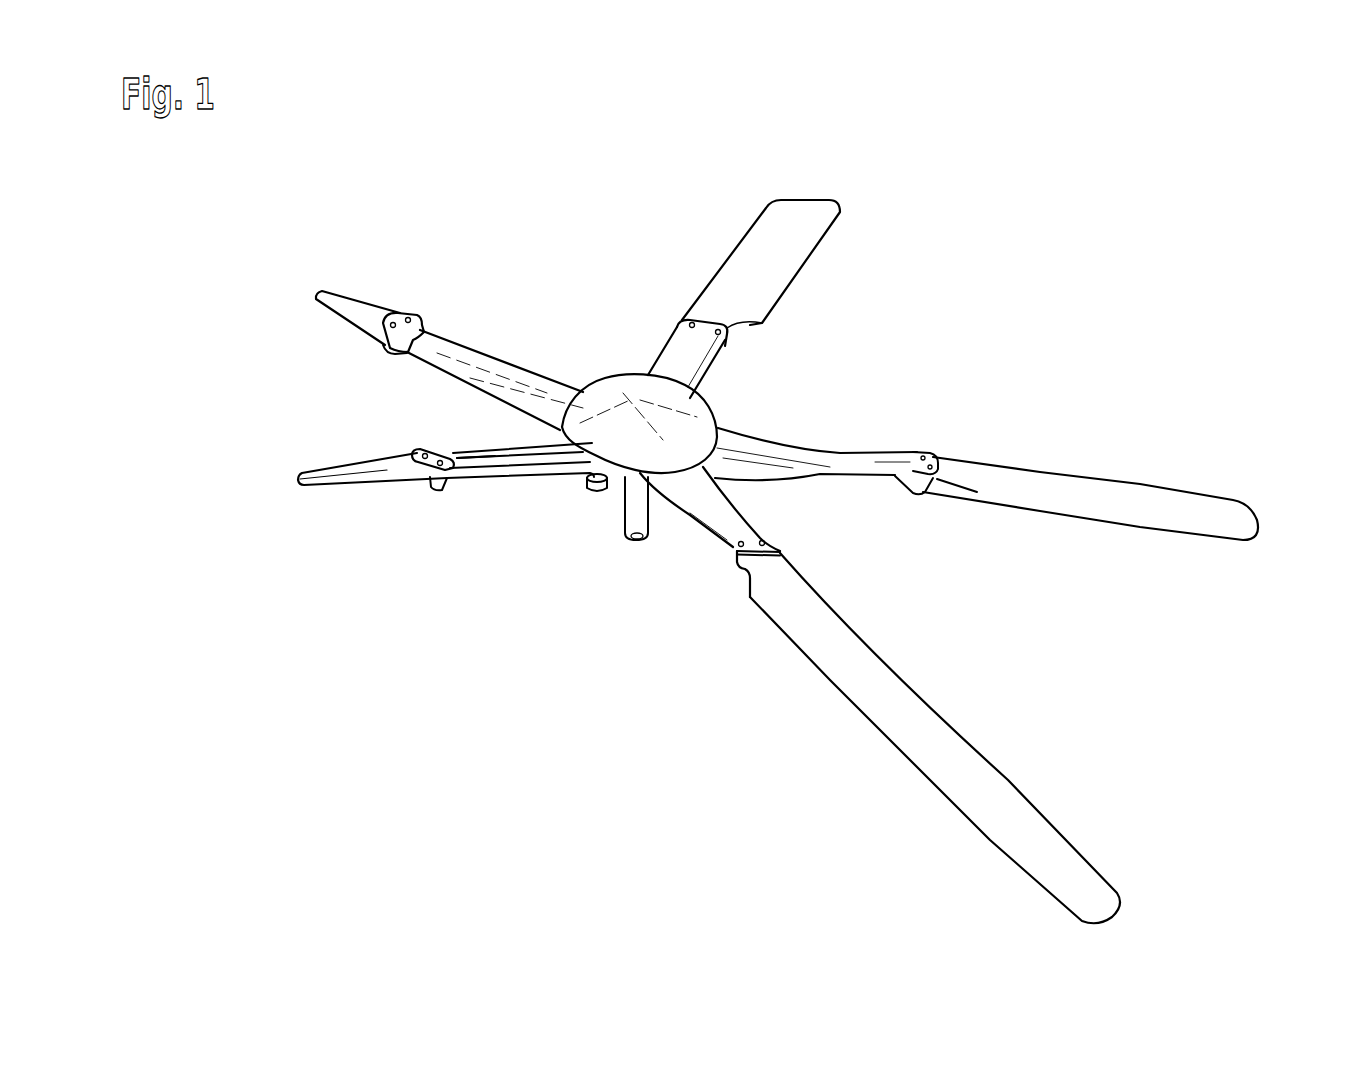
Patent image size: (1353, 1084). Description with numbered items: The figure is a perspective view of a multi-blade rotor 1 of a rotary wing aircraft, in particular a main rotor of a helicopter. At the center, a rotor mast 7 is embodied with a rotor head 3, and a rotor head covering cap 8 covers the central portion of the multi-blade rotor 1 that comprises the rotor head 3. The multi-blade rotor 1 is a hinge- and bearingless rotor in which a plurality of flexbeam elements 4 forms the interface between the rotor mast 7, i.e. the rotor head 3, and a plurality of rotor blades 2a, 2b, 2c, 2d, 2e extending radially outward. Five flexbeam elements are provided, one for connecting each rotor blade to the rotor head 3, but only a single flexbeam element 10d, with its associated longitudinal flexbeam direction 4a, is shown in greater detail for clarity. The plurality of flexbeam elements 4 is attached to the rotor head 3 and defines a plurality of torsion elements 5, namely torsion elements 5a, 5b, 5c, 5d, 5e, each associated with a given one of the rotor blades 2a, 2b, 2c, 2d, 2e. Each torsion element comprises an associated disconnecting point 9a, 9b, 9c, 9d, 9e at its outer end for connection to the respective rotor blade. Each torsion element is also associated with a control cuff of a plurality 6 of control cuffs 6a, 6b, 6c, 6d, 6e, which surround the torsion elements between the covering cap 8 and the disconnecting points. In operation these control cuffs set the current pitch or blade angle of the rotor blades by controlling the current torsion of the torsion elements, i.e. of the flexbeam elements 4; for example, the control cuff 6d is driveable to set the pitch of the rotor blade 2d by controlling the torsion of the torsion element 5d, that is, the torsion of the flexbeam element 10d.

The multi-blade rotor 1 is at (578, 300).
The rotor blade 2a is at (810, 218).
The rotor blade 2b is at (1237, 517).
The rotor blade 2c is at (947, 750).
The rotor blade 2d is at (310, 473).
The rotor blade 2e is at (330, 296).
The rotor head 3 is at (612, 490).
The plurality of flexbeam elements 4 is at (478, 478).
The longitudinal flexbeam direction 4a is at (459, 458).
The plurality of torsion elements 5 is at (922, 436).
The torsion element 5a is at (710, 383).
The torsion element 5b is at (848, 482).
The torsion element 5c is at (693, 524).
The torsion element 5d is at (442, 446).
The torsion element 5e is at (482, 348).
The plurality of control cuffs 6 is at (717, 362).
The control cuff 6a is at (680, 357).
The control cuff 6b is at (862, 453).
The control cuff 6c is at (733, 524).
The control cuff 6d is at (528, 465).
The control cuff 6e is at (530, 387).
The rotor mast 7 is at (640, 517).
The rotor head covering cap 8 is at (712, 413).
The disconnecting point 9a is at (718, 310).
The disconnecting point 9b is at (941, 452).
The disconnecting point 9c is at (760, 560).
The disconnecting point 9d is at (410, 466).
The disconnecting point 9e is at (426, 337).
The flexbeam element 10d is at (503, 472).